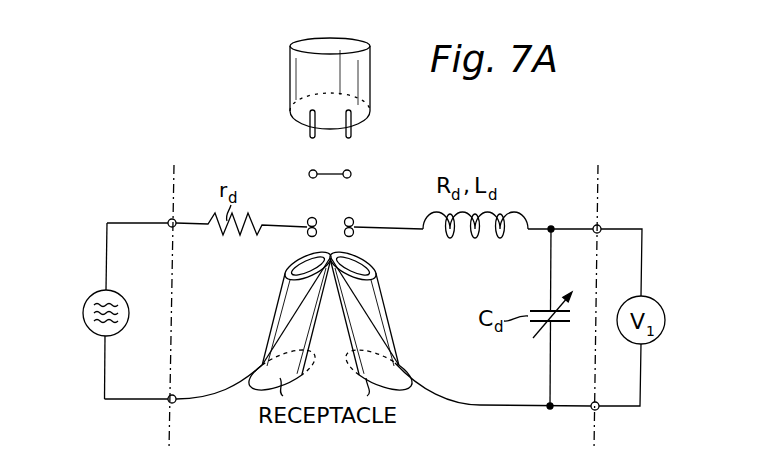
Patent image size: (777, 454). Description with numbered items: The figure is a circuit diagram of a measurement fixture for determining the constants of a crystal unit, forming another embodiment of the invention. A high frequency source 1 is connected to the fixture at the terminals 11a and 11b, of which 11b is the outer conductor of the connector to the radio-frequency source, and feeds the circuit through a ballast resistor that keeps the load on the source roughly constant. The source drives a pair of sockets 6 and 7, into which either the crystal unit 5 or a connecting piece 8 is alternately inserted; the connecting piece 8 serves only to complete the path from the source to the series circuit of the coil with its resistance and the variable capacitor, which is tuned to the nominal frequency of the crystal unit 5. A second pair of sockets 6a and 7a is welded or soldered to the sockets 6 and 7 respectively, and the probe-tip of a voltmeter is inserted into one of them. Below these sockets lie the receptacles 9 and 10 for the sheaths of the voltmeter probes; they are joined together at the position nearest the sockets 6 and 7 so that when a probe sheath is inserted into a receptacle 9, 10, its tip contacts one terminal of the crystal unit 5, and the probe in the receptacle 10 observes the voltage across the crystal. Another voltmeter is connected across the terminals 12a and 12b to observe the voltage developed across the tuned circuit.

The high frequency source 1 is at (130, 313).
The crystal unit 5 is at (358, 77).
The socket 6 is at (308, 220).
The socket 6a is at (308, 235).
The socket 7 is at (353, 220).
The socket 7a is at (352, 235).
The connecting piece 8 is at (330, 173).
The receptacle 9 is at (283, 320).
The receptacle 10 is at (374, 315).
The terminal 11a is at (169, 221).
The outer conductor 11b is at (176, 403).
The terminal 12a is at (601, 227).
The terminal 12b is at (598, 409).